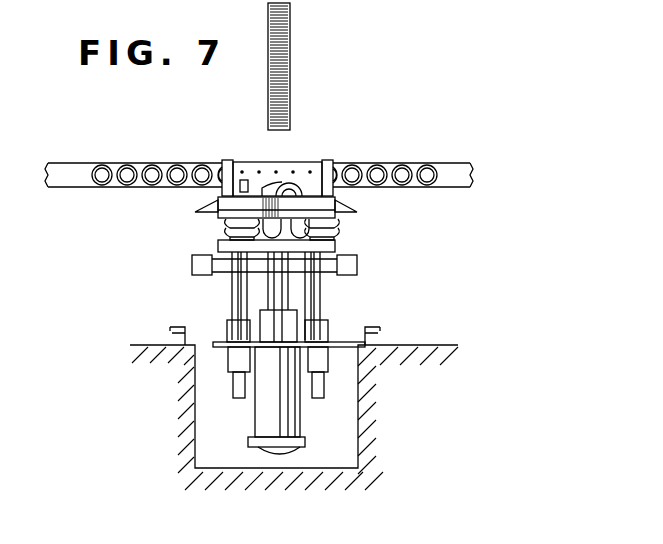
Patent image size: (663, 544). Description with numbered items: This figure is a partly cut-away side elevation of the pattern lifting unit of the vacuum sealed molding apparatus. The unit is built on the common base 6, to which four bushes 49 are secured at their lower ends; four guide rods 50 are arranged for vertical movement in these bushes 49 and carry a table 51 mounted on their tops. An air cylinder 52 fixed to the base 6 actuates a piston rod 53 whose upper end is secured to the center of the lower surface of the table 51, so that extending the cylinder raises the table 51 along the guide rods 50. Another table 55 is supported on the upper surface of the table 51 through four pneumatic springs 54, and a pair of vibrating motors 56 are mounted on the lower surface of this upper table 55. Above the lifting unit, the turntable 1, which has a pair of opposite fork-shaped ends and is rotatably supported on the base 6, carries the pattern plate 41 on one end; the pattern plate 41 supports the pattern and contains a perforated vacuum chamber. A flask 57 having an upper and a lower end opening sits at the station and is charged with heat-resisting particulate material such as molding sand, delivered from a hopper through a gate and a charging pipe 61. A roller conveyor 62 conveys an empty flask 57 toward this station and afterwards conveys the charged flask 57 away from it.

The turntable 1 is at (357, 265).
The common base 6 is at (170, 327).
The pattern plate 41 is at (353, 208).
The bushes 49 is at (228, 363).
The guide rods 50 is at (232, 295).
The table 51 is at (337, 245).
The air cylinder 52 is at (299, 406).
The piston rod 53 is at (285, 296).
The pneumatic springs 54 is at (224, 231).
The table 55 is at (348, 230).
The vibrating motors 56 is at (192, 266).
The flask 57 is at (294, 162).
The charging pipe 61 is at (290, 85).
The roller conveyor 62 is at (186, 165).